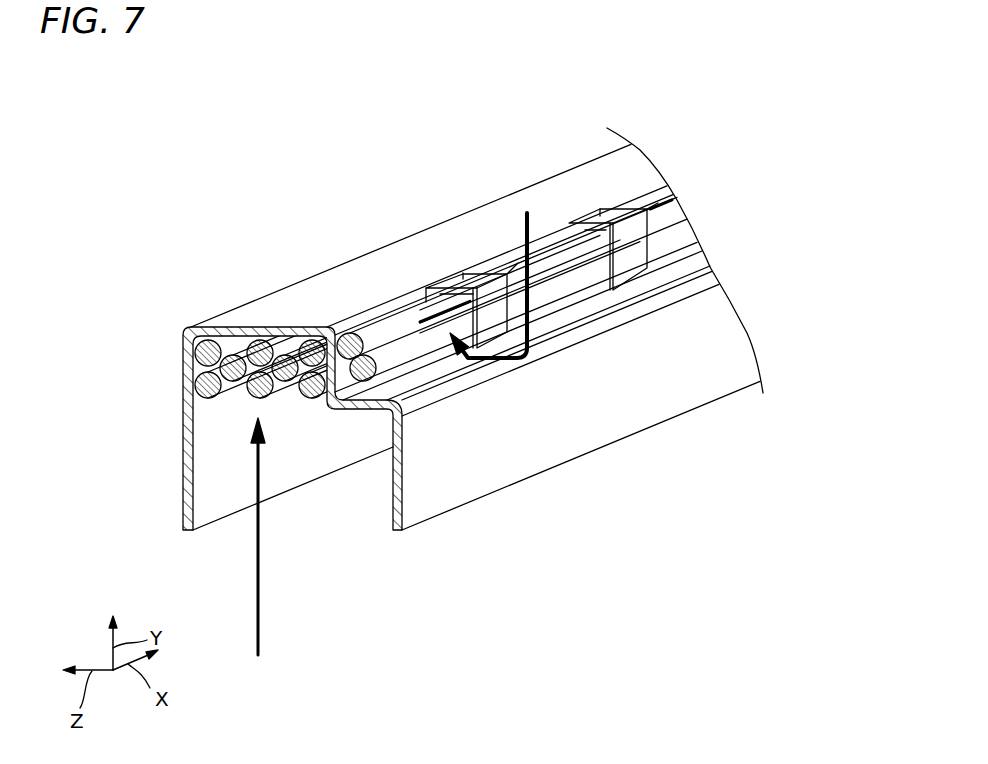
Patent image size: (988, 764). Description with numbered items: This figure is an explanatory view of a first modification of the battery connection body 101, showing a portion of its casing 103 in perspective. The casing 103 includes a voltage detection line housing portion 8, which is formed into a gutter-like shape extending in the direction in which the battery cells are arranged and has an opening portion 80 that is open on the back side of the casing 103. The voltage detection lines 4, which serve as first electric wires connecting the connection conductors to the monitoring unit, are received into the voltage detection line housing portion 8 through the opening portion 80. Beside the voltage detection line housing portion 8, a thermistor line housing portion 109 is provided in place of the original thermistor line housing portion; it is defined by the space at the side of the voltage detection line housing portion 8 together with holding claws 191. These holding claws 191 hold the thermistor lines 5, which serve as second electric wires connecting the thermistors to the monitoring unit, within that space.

The battery connection body 101 is at (707, 86).
The casing 103 is at (383, 245).
The voltage detection lines 4 is at (195, 362).
The thermistor lines 5 is at (578, 245).
The voltage detection line housing portion 8 is at (213, 440).
The opening portion 80 is at (357, 478).
The thermistor line housing portion 109 is at (417, 372).
The holding claws 191 is at (517, 261).